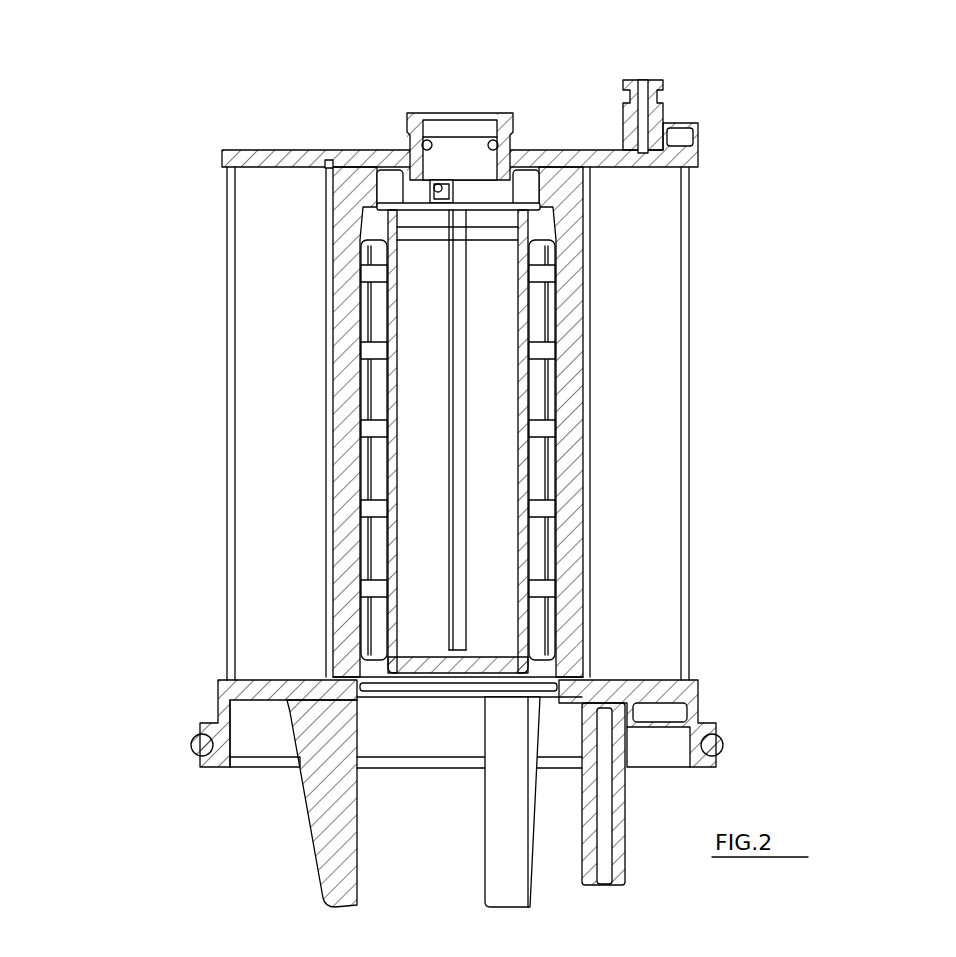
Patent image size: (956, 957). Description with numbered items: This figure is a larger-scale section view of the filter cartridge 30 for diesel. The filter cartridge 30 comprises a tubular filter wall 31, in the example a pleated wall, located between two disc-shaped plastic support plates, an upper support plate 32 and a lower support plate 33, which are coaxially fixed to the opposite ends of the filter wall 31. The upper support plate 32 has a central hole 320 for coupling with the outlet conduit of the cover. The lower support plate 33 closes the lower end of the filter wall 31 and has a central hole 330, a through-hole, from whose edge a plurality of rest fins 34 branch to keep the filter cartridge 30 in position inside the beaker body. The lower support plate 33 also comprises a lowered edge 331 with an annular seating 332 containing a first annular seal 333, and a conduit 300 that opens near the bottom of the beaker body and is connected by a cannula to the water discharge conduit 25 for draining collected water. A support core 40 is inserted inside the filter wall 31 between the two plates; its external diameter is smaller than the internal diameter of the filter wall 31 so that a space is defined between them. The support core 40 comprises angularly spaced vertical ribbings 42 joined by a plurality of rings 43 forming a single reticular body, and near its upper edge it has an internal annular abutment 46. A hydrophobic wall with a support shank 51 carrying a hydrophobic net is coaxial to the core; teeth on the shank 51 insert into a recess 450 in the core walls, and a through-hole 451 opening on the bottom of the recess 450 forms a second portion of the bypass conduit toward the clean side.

The discharge conduit 25 is at (663, 103).
The filter cartridge 30 is at (386, 423).
The tubular filter wall 31 is at (300, 513).
The upper support plate 32 is at (222, 155).
The lower support plate 33 is at (216, 682).
The rest fins 34 is at (318, 833).
The support core 40 is at (330, 272).
The vertical ribbings 42 is at (365, 400).
The rings 43 is at (375, 515).
The internal annular abutment 46 is at (590, 280).
The support shank 51 is at (363, 180).
The conduit 300 is at (623, 847).
The central hole 320 is at (488, 127).
The central hole 330 is at (408, 697).
The lowered edge 331 is at (258, 745).
The annular seating 332 is at (255, 748).
The first annular seal 333 is at (195, 740).
The recess 450 is at (453, 193).
The through-hole 451 is at (423, 193).